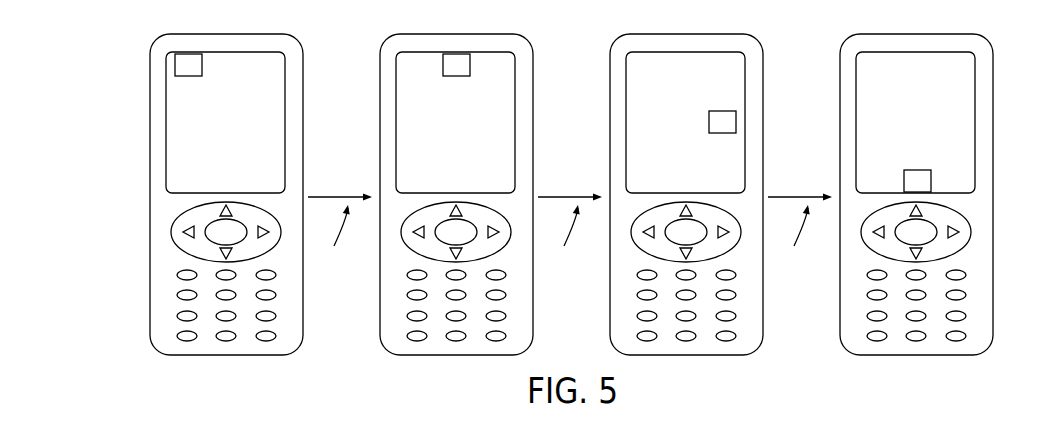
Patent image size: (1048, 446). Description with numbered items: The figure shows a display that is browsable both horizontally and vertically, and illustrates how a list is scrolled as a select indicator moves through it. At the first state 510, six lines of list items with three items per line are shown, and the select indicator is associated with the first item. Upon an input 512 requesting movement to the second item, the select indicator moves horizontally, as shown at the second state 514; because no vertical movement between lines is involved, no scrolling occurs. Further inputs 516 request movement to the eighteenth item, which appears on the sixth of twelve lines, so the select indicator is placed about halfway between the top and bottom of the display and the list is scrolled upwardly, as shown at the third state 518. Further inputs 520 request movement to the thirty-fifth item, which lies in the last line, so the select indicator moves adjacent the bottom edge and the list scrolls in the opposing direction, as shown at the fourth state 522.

The initial display state 510 is at (244, 213).
The input 512 is at (336, 186).
The second display state 514 is at (475, 213).
The further inputs 516 is at (566, 186).
The third display state 518 is at (705, 225).
The further inputs 520 is at (796, 186).
The fourth display state 522 is at (937, 225).